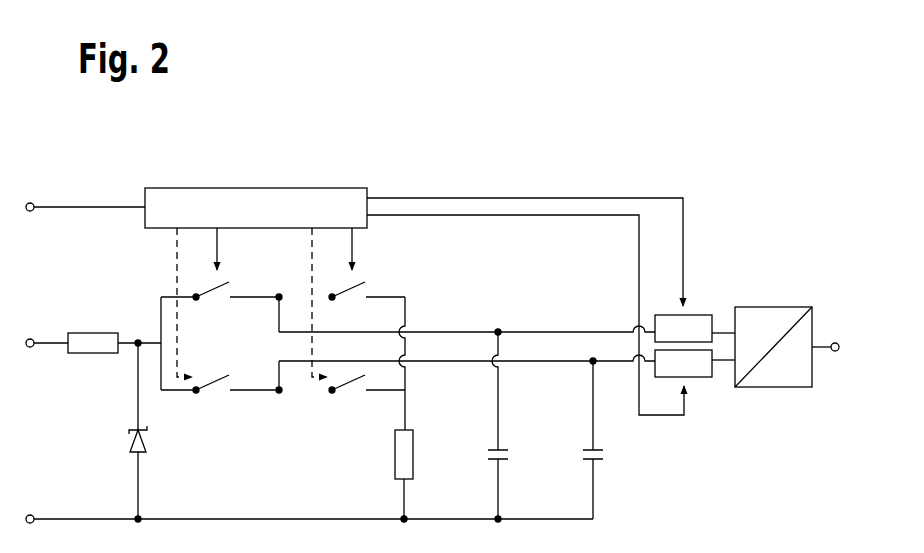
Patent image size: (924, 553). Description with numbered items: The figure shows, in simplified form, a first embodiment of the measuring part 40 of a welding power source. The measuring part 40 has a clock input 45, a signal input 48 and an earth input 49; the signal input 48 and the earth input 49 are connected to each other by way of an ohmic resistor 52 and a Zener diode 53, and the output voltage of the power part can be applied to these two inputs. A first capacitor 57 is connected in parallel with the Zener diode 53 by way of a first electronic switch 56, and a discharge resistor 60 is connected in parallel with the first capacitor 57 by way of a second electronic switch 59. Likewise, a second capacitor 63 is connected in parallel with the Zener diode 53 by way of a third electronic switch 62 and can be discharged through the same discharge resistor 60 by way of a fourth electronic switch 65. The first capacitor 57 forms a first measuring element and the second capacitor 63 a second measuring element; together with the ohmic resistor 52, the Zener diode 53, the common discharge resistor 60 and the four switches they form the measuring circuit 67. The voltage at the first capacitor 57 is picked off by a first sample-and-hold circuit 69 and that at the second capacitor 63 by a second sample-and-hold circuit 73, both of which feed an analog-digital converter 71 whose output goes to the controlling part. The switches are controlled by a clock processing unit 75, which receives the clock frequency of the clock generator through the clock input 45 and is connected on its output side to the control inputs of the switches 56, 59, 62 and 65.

The measuring part 40 is at (550, 170).
The clock input 45 is at (30, 202).
The signal input 48 is at (30, 338).
The earth input 49 is at (30, 514).
The ohmic resistor 52 is at (90, 333).
The Zener diode 53 is at (130, 441).
The first electronic switch 56 is at (219, 302).
The first capacitor 57 is at (490, 449).
The second electronic switch 59 is at (376, 286).
The discharge resistor 60 is at (413, 459).
The third electronic switch 62 is at (217, 403).
The second capacitor 63 is at (585, 449).
The fourth electronic switch 65 is at (350, 403).
The measuring circuit 67 is at (470, 318).
The first sample-and-hold circuit 69 is at (698, 325).
The analog-digital converter 71 is at (778, 320).
The second sample-and-hold circuit 73 is at (698, 368).
The clock processing unit 75 is at (263, 207).